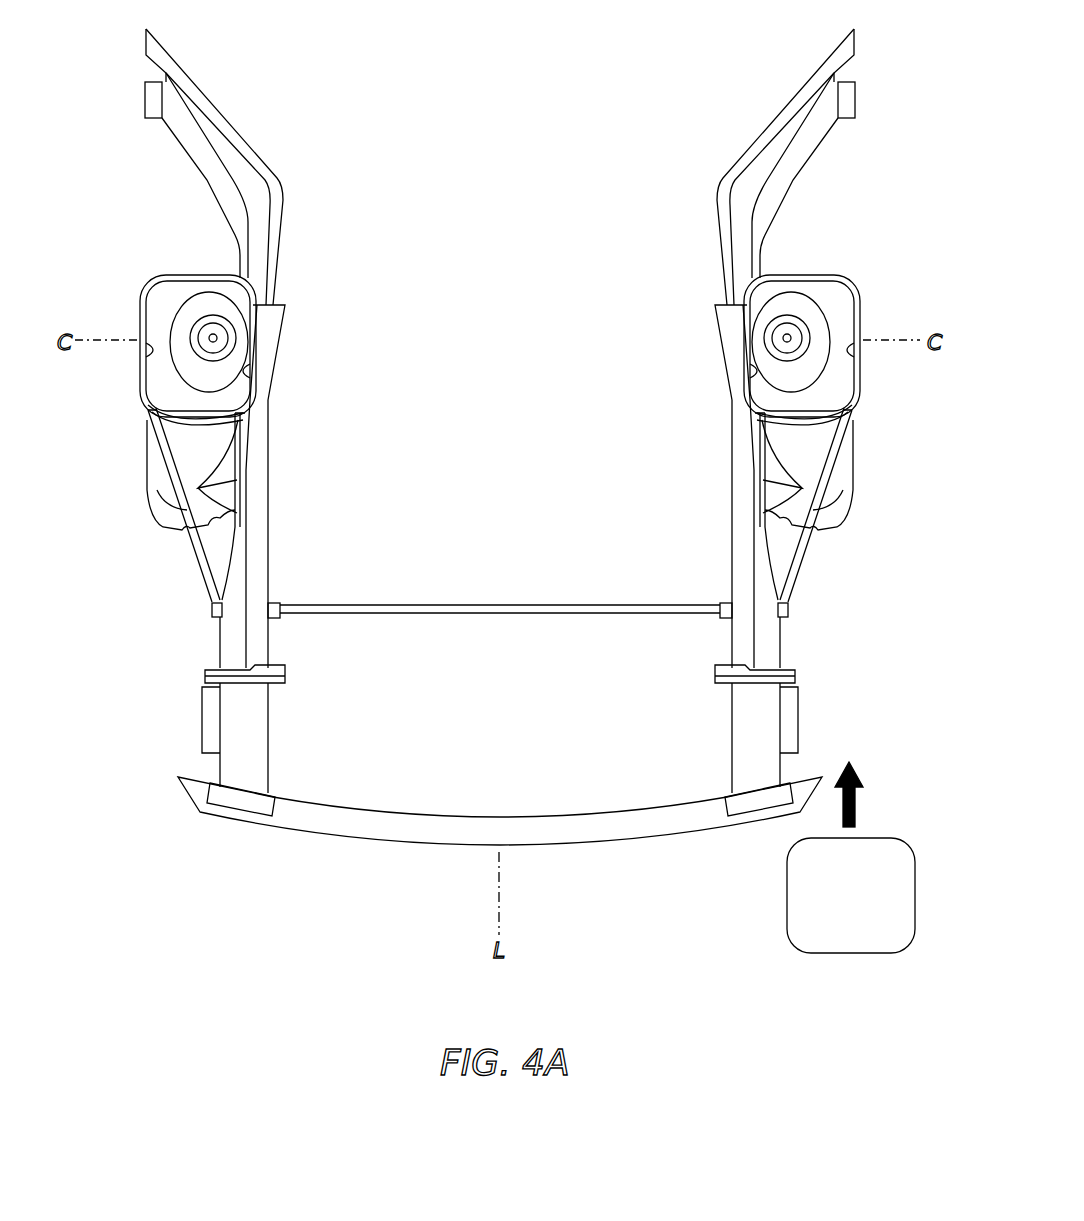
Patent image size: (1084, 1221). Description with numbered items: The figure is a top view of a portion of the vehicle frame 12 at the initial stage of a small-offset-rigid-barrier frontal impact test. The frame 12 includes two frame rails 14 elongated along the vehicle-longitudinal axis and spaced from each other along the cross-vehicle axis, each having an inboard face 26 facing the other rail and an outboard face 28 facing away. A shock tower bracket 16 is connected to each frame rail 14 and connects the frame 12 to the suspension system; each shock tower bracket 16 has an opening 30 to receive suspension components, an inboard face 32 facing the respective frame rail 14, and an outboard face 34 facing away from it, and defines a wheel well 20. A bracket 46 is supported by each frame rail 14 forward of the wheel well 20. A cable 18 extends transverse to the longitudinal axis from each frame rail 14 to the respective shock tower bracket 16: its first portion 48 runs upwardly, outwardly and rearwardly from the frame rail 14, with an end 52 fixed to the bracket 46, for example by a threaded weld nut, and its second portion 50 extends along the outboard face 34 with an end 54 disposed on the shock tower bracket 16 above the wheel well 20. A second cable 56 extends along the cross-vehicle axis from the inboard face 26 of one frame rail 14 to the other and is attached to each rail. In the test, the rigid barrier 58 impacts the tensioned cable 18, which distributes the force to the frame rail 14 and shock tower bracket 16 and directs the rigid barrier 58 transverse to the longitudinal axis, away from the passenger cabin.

The frame 12 is at (835, 150).
The frame rail 14 is at (290, 340).
The shock tower bracket 16 is at (158, 298).
The cable 18 is at (155, 458).
The wheel well 20 is at (501, 440).
The inboard face 26 is at (270, 515).
The outboard face 28 is at (228, 553).
The opening 30 is at (211, 334).
The inboard face 32 is at (250, 371).
The outboard face 34 is at (156, 349).
The bracket 46 is at (214, 619).
The first portion 48 is at (176, 493).
The second portion 50 is at (252, 394).
The end 52 is at (210, 598).
The end 54 is at (170, 422).
The second cable 56 is at (473, 603).
The rigid barrier 58 is at (832, 953).